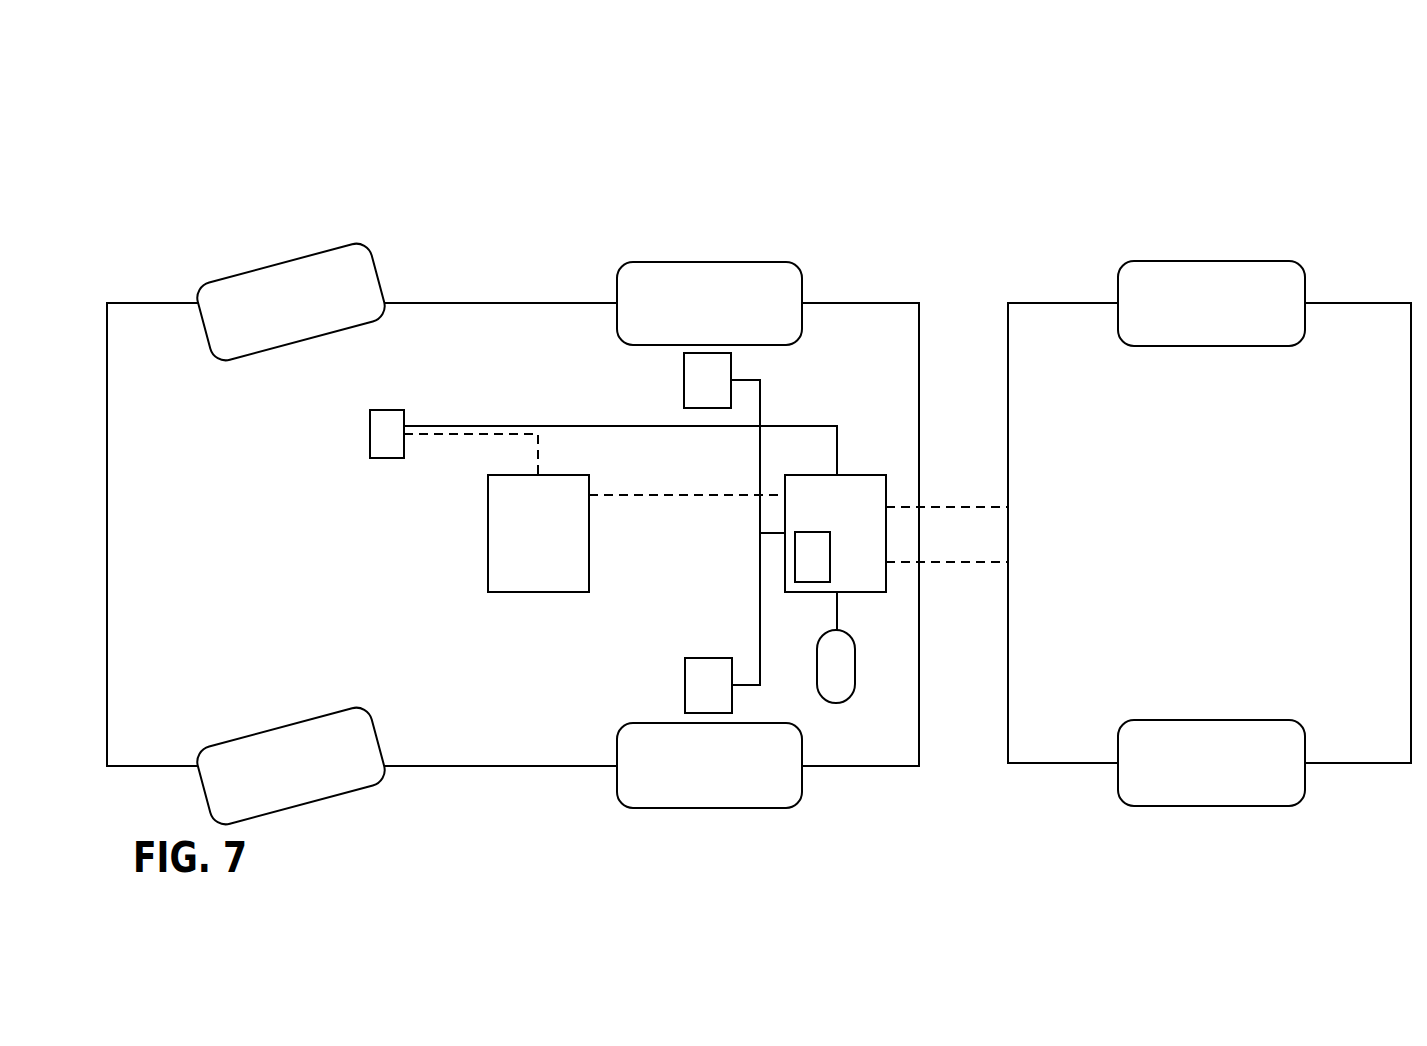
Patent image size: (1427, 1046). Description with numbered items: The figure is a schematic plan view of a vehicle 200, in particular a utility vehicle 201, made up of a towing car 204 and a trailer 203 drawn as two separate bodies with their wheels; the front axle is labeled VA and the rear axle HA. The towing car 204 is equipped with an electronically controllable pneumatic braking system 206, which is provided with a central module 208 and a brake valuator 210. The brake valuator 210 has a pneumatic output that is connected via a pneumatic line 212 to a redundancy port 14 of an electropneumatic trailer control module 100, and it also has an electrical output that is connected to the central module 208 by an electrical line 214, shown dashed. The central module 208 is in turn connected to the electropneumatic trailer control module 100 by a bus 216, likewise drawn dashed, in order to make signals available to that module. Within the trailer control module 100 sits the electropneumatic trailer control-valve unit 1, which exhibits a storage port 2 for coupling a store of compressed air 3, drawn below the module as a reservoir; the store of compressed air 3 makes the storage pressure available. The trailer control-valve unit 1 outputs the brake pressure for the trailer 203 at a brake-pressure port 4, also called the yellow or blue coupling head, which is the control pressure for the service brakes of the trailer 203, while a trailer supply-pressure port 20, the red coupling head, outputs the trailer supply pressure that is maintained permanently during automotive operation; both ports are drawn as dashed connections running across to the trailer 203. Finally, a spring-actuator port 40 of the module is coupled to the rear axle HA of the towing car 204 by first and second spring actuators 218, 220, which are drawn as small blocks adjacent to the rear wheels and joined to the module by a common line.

The vehicle 200 is at (486, 407).
The utility vehicle 201 is at (513, 534).
The trailer 203 is at (1073, 196).
The towing car 204 is at (151, 272).
The electronically controllable pneumatic braking system 206 is at (521, 334).
The central module 208 is at (538, 533).
The brake valuator 210 is at (391, 410).
The pneumatic line 212 is at (563, 426).
The electrical line 214 is at (541, 452).
The bus 216 is at (660, 495).
The first spring actuator 218 is at (731, 370).
The second spring actuator 220 is at (698, 700).
The redundancy port 14 is at (837, 475).
The electropneumatic trailer control-valve unit 1 is at (830, 545).
The spring-actuator port 40 is at (783, 537).
The storage port 2 is at (834, 602).
The electropneumatic trailer control module 100 is at (815, 539).
The store of compressed air 3 is at (855, 675).
The trailer supply-pressure port 20 is at (919, 507).
The brake-pressure port 4 is at (919, 562).
The front axle VA is at (250, 471).
The rear axle HA is at (738, 197).